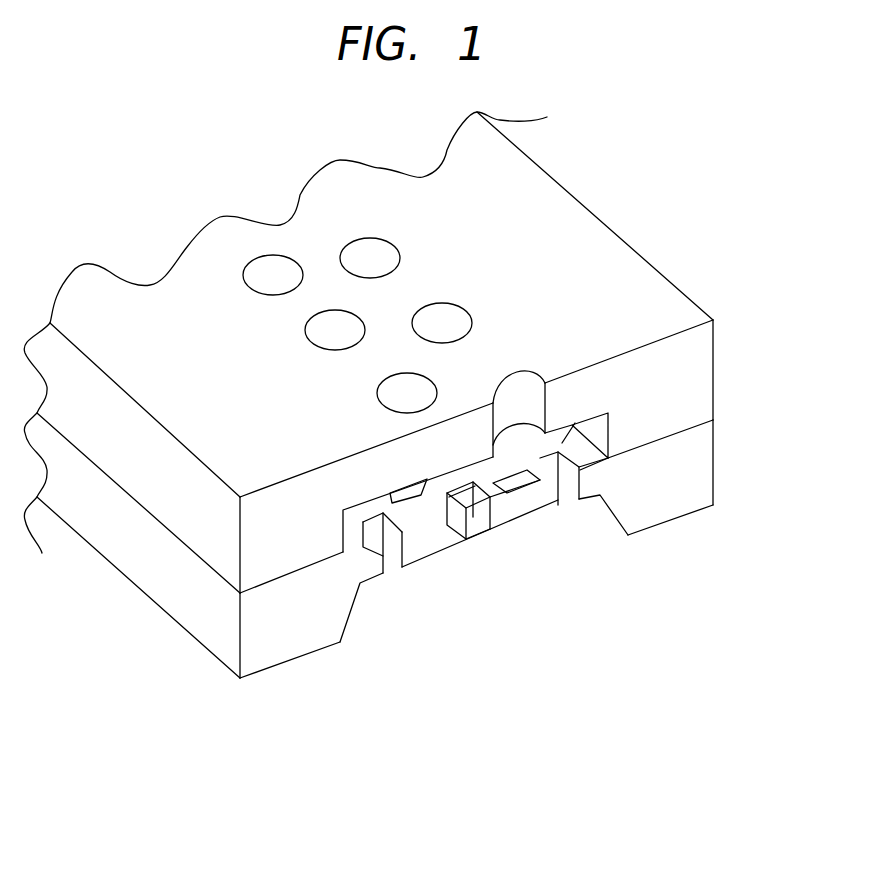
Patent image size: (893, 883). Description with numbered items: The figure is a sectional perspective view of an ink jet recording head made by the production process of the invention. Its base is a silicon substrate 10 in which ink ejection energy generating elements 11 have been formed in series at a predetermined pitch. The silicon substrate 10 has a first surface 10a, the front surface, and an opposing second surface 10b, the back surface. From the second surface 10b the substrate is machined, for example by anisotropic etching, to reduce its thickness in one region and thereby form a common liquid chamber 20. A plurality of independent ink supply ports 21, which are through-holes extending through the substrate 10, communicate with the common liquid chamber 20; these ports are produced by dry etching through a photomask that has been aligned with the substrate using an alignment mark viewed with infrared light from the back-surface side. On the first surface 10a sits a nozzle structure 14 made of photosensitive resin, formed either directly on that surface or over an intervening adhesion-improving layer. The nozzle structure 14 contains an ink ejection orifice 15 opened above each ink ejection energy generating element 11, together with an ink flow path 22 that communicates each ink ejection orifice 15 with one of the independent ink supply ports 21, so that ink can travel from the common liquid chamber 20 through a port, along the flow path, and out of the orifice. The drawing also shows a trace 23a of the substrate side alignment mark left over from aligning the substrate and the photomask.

The silicon substrate 10 is at (700, 472).
The first surface 10a is at (280, 567).
The second surface 10b is at (302, 648).
The ink ejection energy generating element 11 is at (530, 487).
The nozzle structure 14 is at (700, 385).
The ink ejection orifice 15 is at (448, 311).
The common liquid chamber 20 is at (415, 595).
The independent ink supply port 21 is at (394, 545).
The ink flow path 22 is at (570, 432).
The trace of the substrate side alignment mark 23a is at (455, 540).